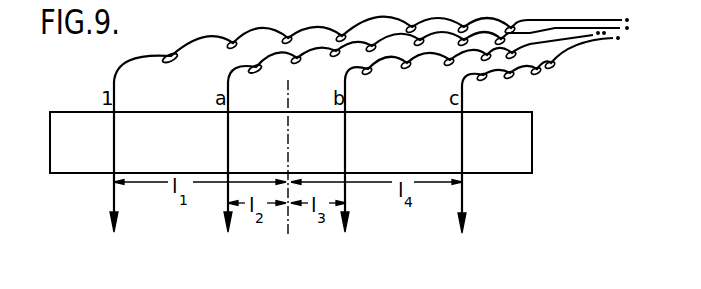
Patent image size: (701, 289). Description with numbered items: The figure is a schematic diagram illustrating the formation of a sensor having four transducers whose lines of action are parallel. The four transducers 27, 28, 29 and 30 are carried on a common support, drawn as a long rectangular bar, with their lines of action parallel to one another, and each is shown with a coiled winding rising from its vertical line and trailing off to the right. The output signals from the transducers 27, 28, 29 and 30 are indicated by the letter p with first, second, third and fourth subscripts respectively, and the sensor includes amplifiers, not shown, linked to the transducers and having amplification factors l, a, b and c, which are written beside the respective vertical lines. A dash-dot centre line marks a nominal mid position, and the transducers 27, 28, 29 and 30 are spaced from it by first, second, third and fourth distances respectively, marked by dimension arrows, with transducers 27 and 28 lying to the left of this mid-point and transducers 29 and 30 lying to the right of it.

The transducer 27 is at (112, 208).
The transducer 28 is at (227, 206).
The transducer 29 is at (348, 213).
The transducer 30 is at (464, 218).